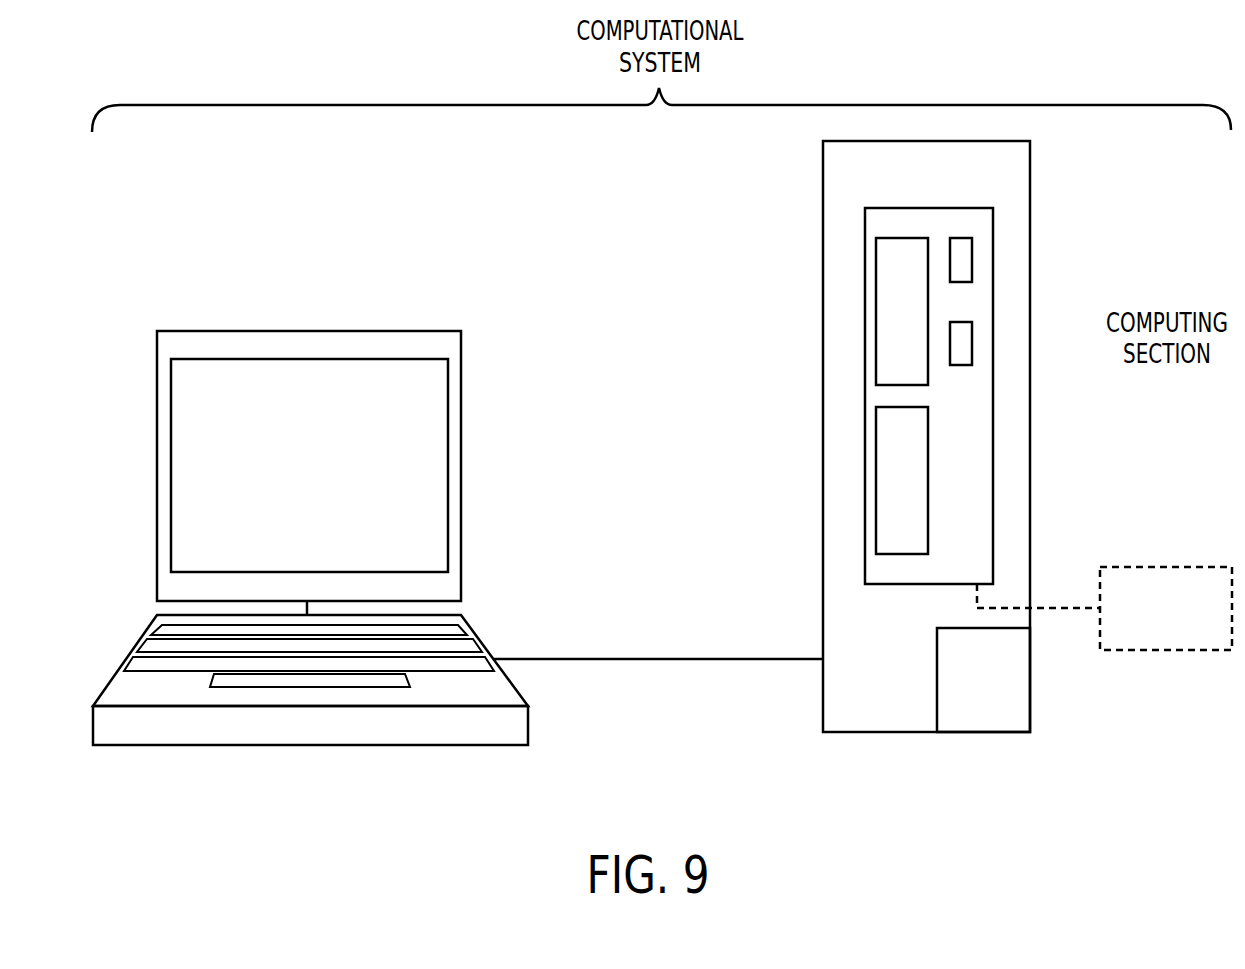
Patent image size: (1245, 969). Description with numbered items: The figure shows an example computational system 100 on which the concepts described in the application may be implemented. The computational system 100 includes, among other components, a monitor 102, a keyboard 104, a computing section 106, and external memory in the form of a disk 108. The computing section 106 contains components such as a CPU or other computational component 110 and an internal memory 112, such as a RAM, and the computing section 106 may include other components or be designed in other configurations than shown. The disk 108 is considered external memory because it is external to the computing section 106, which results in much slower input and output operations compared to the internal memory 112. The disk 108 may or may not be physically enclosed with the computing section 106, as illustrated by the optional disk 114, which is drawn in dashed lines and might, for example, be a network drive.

The computational system 100 is at (468, 201).
The monitor 102 is at (242, 331).
The keyboard 104 is at (177, 747).
The computing section 106 is at (1013, 365).
The disk 108 is at (1000, 715).
The CPU or other computational component 110 is at (886, 353).
The internal memory 112 is at (886, 524).
The optional disk 114 is at (1200, 577).